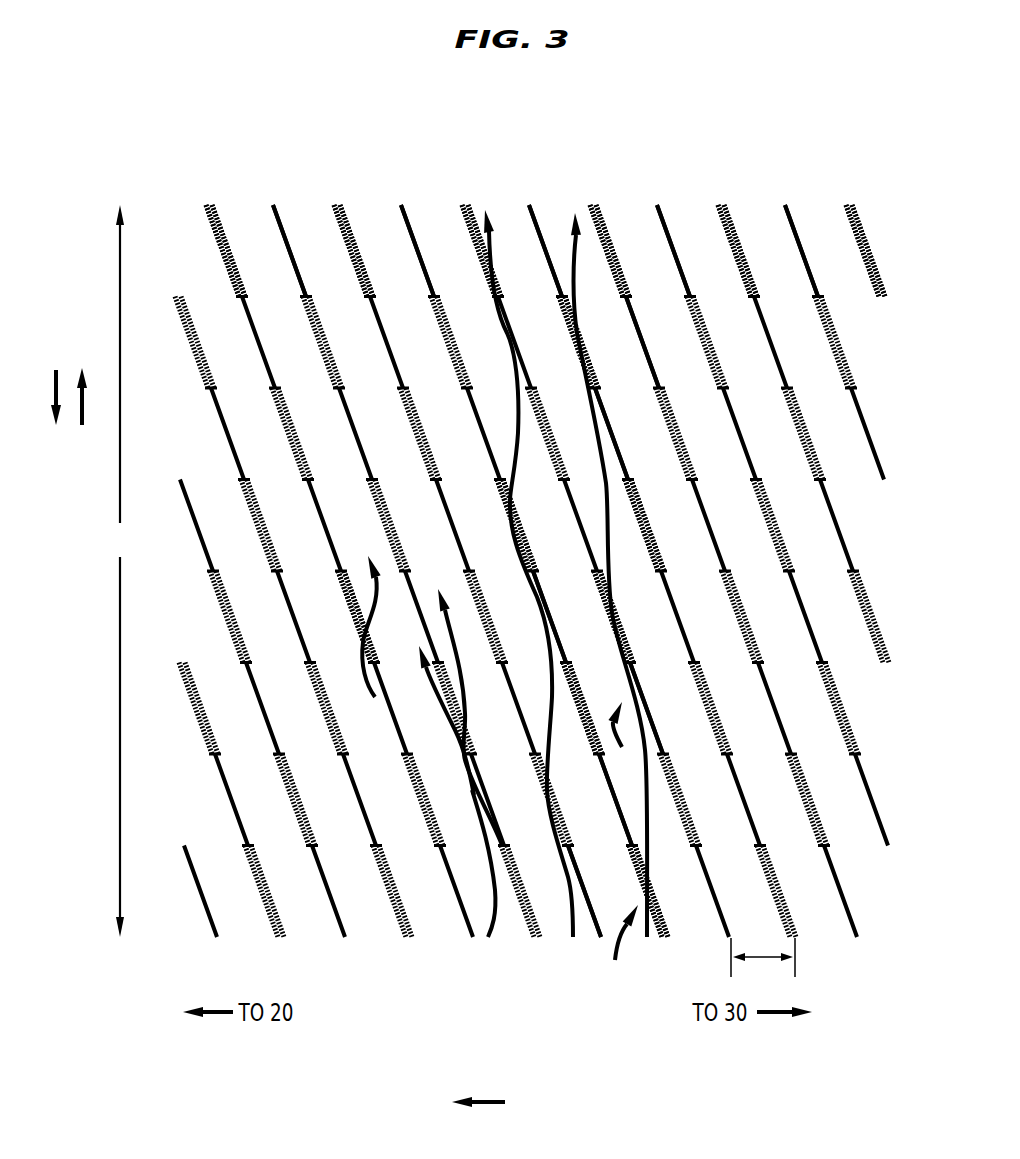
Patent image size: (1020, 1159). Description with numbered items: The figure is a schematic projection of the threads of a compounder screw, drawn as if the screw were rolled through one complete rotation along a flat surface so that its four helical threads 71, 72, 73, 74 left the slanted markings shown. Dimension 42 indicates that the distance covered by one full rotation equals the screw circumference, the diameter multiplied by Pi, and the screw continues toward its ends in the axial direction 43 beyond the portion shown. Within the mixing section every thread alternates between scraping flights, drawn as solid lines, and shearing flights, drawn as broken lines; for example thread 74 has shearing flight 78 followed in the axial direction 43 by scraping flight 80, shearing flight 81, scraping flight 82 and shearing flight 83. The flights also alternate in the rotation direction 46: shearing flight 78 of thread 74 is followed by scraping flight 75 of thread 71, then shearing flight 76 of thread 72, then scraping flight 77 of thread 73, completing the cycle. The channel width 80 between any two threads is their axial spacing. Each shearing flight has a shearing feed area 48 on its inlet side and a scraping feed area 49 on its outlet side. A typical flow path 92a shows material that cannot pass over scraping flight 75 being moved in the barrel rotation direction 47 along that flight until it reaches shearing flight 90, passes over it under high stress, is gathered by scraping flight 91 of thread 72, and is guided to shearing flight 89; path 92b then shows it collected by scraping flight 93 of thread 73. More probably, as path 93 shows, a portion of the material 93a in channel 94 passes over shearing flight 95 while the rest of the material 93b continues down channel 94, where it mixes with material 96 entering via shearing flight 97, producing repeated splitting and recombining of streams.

The dimension 42 is at (120, 682).
The axial direction 43 is at (494, 1102).
The rotation direction 46 is at (56, 383).
The barrel rotation direction 47 is at (82, 383).
The shearing feed area 48 is at (618, 947).
The scraping feed area 49 is at (626, 741).
The helical thread 71 is at (746, 178).
The helical thread 72 is at (810, 178).
The helical thread 73 is at (874, 178).
The helical thread 74 is at (682, 178).
The scraping flight 75 is at (645, 695).
The shearing flight 76 is at (648, 510).
The scraping flight 77 is at (641, 337).
The shearing flight 78 is at (667, 923).
The scraping flight 80 is at (605, 767).
The shearing flight 81 is at (578, 682).
The scraping flight 82 is at (560, 632).
The shearing flight 83 is at (528, 538).
The shearing flight 89 is at (578, 350).
The shearing flight 90 is at (626, 637).
The scraping flight 91 is at (612, 440).
The path 92a is at (647, 937).
The path 92b is at (573, 937).
The path 93 is at (493, 918).
The portion of the material 93a is at (457, 642).
The rest of the material 93b is at (430, 680).
The channel 94 is at (249, 235).
The shearing flight 95 is at (475, 742).
The material 96 is at (361, 653).
The shearing flight 97 is at (345, 590).